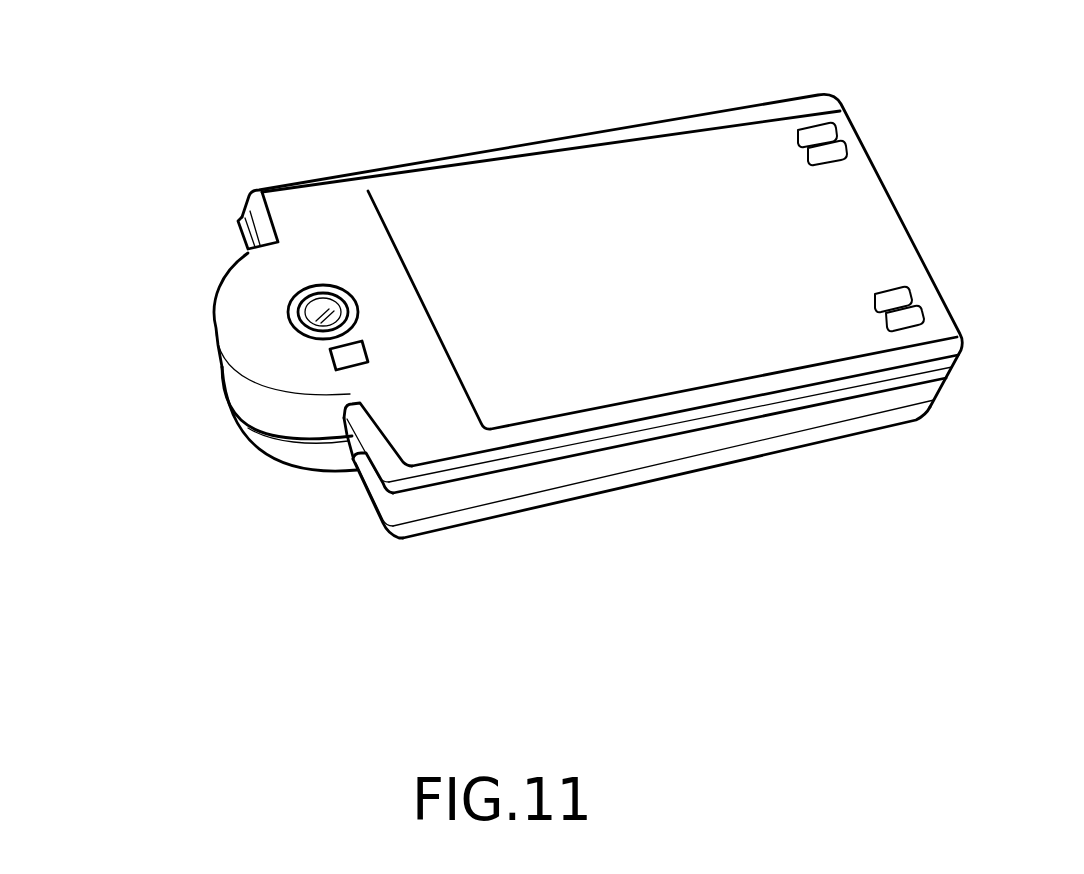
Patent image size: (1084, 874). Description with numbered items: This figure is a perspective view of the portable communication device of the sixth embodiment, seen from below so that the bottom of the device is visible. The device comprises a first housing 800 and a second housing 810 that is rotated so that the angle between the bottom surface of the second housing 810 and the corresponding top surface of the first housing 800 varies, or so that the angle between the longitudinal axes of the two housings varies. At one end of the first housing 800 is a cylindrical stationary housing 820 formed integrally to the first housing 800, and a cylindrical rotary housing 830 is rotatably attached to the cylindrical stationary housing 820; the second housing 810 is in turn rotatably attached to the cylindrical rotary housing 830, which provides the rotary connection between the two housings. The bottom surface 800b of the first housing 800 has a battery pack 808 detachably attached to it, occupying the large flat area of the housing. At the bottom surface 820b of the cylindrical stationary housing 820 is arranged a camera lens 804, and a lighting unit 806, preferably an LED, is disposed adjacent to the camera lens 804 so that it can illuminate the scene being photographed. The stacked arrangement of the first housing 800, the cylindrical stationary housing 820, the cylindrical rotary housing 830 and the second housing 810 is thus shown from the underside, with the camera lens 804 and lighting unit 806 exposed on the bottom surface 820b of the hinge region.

The first housing 800 is at (625, 436).
The bottom surface of the first housing 800b is at (425, 448).
The camera lens 804 is at (320, 308).
The lighting unit 806 is at (338, 355).
The battery pack 808 is at (610, 157).
The second housing 810 is at (538, 490).
The cylindrical stationary housing 820 is at (292, 413).
The bottom surface of the cylindrical stationary housing 820b is at (233, 302).
The cylindrical rotary housing 830 is at (312, 457).